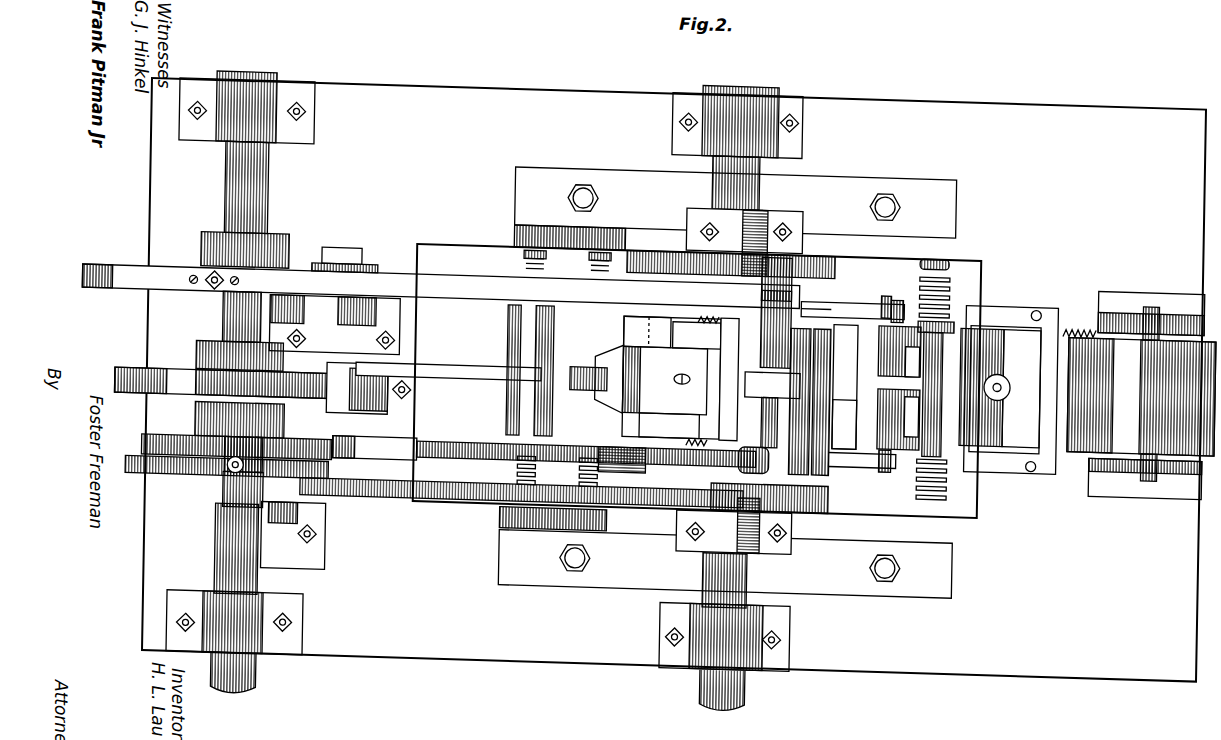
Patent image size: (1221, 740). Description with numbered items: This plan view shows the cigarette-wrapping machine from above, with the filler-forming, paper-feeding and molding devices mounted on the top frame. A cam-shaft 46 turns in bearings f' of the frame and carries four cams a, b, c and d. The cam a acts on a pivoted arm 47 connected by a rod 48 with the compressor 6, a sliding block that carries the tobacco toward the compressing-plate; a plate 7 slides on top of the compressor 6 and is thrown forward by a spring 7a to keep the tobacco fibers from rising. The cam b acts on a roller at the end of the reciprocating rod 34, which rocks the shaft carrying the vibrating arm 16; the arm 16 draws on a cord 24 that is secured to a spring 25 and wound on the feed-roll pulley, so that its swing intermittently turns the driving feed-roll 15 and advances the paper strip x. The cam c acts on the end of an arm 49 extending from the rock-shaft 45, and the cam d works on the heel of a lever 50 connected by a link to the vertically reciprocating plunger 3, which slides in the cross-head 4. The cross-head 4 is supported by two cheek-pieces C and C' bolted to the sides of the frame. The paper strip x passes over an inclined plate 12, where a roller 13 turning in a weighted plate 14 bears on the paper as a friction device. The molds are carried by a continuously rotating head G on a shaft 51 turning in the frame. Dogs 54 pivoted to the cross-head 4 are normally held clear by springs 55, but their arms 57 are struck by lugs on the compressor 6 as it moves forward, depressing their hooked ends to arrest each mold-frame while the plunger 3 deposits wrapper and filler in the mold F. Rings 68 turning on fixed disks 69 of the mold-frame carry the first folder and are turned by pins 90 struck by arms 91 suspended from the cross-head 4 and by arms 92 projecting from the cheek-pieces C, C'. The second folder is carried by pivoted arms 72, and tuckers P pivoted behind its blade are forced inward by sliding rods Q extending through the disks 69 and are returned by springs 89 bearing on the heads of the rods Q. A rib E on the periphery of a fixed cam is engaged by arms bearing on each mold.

The cam-shaft 46 is at (265, 211).
The bearings f' is at (240, 370).
The cam d is at (174, 282).
The cam a is at (129, 384).
The cam b is at (140, 457).
The cam c is at (127, 482).
The arm 49 is at (218, 506).
The rock-shaft 45 is at (456, 492).
The pivoted arm 47 is at (361, 418).
The rod 48 is at (455, 373).
The lever 50 is at (456, 284).
The shaft 51 is at (758, 190).
The cheek-piece C is at (730, 240).
The cheek-piece C' is at (708, 528).
The compressor 6 is at (633, 392).
The plate 7 is at (671, 377).
The spring 7a is at (650, 348).
The dog arm 57 is at (702, 316).
The spring 55 is at (697, 335).
The dog 54 is at (672, 430).
The cross-head 4 is at (736, 379).
The feed-roll 15 is at (772, 385).
The plunger 3 is at (754, 414).
The vibrating arm 16 is at (844, 387).
The revolving head G is at (870, 388).
The reciprocating rod 34 is at (463, 454).
The cord 24 is at (838, 317).
The arms 91 is at (836, 293).
The arms 92 is at (886, 300).
The tucker P is at (915, 338).
The arms 72 is at (906, 355).
The rib E is at (910, 394).
The fixed disk 69 is at (910, 424).
The sliding rod Q is at (947, 259).
The spring 89 is at (945, 290).
The pin 90 is at (953, 314).
The ring 68 is at (944, 480).
The inclined plate 12 is at (1024, 462).
The mold F is at (981, 387).
The weighted plate 14 is at (1021, 389).
The roller 13 is at (1002, 402).
The spring 25 is at (1069, 313).
The paper strip x is at (1141, 397).